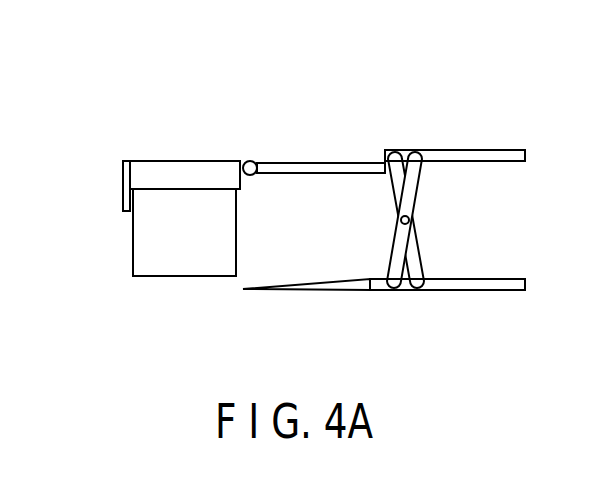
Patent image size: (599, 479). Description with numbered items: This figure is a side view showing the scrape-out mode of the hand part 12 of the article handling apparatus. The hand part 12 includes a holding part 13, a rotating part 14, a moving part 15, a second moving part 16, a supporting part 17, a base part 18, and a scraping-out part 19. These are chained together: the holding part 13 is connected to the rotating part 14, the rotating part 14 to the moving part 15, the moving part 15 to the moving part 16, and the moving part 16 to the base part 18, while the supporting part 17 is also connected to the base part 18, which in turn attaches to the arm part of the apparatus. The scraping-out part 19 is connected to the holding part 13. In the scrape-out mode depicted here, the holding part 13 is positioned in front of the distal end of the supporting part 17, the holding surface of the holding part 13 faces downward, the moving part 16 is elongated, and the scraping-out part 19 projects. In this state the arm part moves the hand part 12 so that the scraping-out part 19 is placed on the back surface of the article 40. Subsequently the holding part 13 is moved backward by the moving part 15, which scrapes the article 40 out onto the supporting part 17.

The hand part 12 is at (462, 98).
The holding part 13 is at (160, 160).
The rotating part 14 is at (250, 161).
The moving part 15 is at (355, 163).
The moving part 16 is at (498, 150).
The supporting part 17 is at (335, 291).
The base part 18 is at (473, 291).
The scraping-out part 19 is at (122, 176).
The article 40 is at (133, 237).